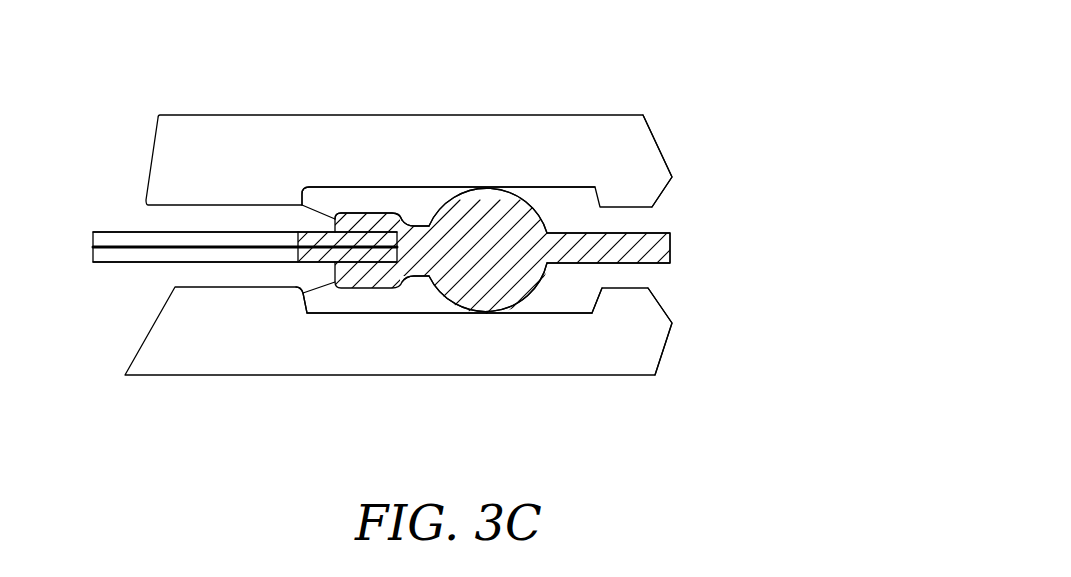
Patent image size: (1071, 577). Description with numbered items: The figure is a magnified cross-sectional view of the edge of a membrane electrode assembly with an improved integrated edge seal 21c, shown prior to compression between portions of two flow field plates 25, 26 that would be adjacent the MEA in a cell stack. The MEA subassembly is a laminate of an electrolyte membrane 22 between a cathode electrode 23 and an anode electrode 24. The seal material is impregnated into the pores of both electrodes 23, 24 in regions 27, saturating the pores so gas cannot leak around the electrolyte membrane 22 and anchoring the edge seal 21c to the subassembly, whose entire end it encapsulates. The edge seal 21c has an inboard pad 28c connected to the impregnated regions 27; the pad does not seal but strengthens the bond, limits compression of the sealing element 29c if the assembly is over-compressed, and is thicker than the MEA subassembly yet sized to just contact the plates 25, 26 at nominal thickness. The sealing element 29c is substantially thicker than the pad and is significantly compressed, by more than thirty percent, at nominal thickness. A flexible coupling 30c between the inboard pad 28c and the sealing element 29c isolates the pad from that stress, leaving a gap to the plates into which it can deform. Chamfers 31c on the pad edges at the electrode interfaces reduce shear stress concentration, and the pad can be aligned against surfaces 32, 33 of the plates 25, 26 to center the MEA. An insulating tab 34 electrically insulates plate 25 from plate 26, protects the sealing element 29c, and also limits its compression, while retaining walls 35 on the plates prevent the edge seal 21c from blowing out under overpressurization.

The edge seal 21c is at (685, 248).
The electrolyte membrane 22 is at (93, 248).
The cathode electrode 23 is at (142, 236).
The anode electrode 24 is at (142, 255).
The flow field plate 25 is at (580, 128).
The flow field plate 26 is at (623, 360).
The regions 27 is at (358, 253).
The inboard pad 28c is at (366, 220).
The sealing element 29c is at (498, 272).
The flexible coupling 30c is at (418, 250).
The chamfers 31c is at (333, 225).
The surface 32 is at (307, 199).
The surface 33 is at (328, 292).
The insulating tab 34 is at (582, 250).
The retaining walls 35 is at (655, 172).